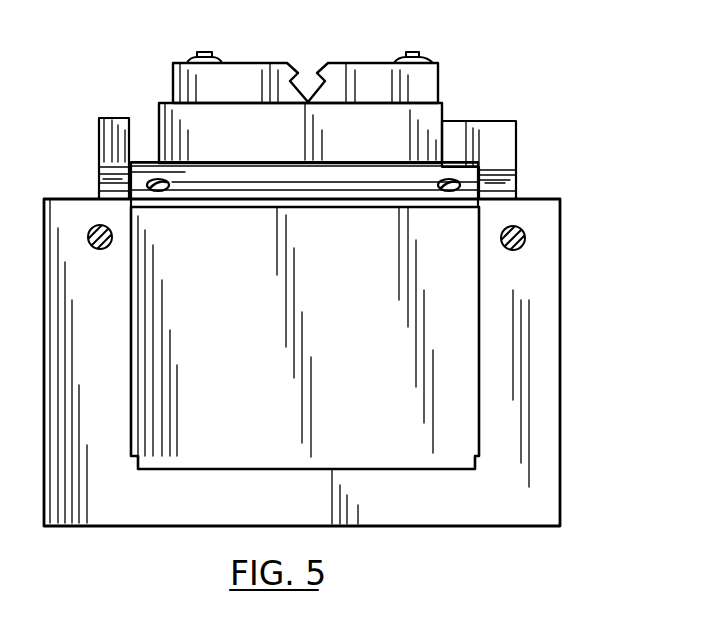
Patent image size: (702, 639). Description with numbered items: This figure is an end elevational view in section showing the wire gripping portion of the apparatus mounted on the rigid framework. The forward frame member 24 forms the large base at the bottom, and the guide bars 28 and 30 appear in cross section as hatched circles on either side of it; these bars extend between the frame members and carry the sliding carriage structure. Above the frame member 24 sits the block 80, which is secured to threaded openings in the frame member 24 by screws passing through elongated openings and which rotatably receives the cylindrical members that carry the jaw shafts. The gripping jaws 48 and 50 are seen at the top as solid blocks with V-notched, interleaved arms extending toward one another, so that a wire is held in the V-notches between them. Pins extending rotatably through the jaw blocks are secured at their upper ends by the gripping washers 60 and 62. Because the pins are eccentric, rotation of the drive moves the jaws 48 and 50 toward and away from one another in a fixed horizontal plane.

The forward frame member 24 is at (551, 378).
The guide bar 28 is at (105, 250).
The guide bar 30 is at (515, 251).
The gripping jaw 48 is at (242, 72).
The gripping jaw 50 is at (434, 85).
The gripping washer 60 is at (212, 52).
The gripping washer 62 is at (416, 50).
The block 80 is at (493, 132).